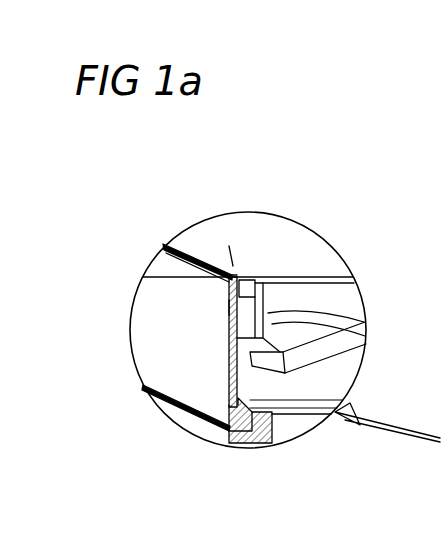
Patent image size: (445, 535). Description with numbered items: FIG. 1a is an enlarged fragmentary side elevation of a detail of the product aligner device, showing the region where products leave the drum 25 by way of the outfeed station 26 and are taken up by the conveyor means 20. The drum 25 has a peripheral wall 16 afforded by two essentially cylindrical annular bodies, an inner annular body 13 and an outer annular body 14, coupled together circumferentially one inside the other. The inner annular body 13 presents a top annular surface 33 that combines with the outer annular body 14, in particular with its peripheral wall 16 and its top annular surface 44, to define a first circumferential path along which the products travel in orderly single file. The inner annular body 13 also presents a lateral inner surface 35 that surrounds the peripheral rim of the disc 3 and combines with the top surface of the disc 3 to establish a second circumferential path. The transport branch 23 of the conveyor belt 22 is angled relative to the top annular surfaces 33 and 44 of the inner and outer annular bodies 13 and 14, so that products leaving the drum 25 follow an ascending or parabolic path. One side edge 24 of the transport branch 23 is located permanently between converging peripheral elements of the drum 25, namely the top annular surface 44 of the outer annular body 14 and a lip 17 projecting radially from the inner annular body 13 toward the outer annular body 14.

The disc 3 is at (292, 345).
The inner annular body 13 is at (228, 343).
The outer annular body 14 is at (228, 279).
The peripheral wall 16 is at (282, 304).
The lip 17 is at (262, 275).
The conveyor means 20 is at (180, 242).
The conveyor belt 22 is at (202, 258).
The transport branch 23 is at (231, 272).
The side edge 24 is at (238, 318).
The drum 25 is at (227, 307).
The outfeed station 26 is at (247, 243).
The top annular surface 33 is at (252, 275).
The lateral inner surface 35 is at (270, 294).
The top annular surface 44 is at (229, 245).